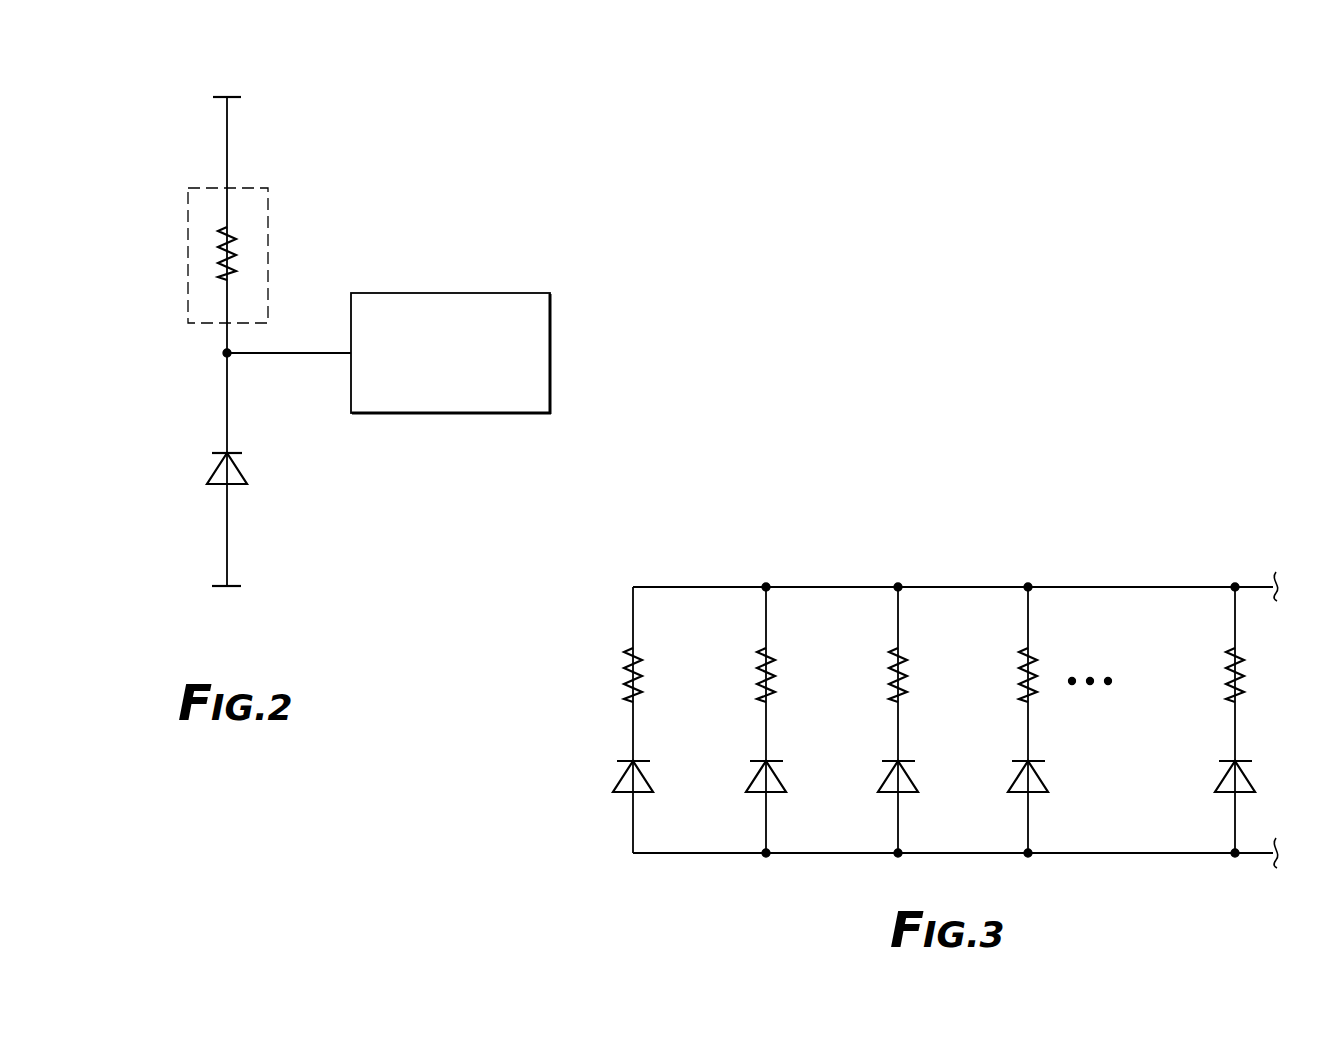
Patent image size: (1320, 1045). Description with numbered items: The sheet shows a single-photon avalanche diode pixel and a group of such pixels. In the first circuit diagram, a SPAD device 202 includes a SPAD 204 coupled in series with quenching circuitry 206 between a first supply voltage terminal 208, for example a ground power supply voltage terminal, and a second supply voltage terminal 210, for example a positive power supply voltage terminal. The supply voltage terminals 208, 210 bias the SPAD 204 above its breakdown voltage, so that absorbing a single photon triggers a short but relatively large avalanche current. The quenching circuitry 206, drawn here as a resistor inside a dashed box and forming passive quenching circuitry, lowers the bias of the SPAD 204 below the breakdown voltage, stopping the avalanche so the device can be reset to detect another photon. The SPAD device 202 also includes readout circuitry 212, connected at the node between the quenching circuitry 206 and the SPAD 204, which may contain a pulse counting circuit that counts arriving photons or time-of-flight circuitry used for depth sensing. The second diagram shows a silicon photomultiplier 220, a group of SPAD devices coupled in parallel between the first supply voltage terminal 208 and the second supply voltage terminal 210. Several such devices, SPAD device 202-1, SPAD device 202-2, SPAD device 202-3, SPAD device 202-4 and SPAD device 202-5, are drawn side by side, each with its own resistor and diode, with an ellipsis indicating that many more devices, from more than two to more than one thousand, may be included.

In FIG. 2, the SPAD device 202 is at (136, 108).
In FIG. 2, the SPAD 204 is at (198, 473).
In FIG. 2, the quenching circuitry 206 is at (187, 237).
In FIG. 2, the first supply voltage terminal 208 is at (232, 98).
In FIG. 3, the first supply voltage terminal 208 is at (1253, 587).
In FIG. 2, the second supply voltage terminal 210 is at (220, 592).
In FIG. 3, the second supply voltage terminal 210 is at (1252, 855).
In FIG. 2, the readout circuitry 212 is at (455, 293).
In FIG. 3, the silicon photomultiplier 220 is at (642, 541).
In FIG. 3, the SPAD device 202-1 is at (614, 648).
In FIG. 3, the SPAD device 202-2 is at (748, 666).
In FIG. 3, the SPAD device 202-3 is at (881, 668).
In FIG. 3, the SPAD device 202-4 is at (1011, 668).
In FIG. 3, the SPAD device 202-5 is at (1218, 668).